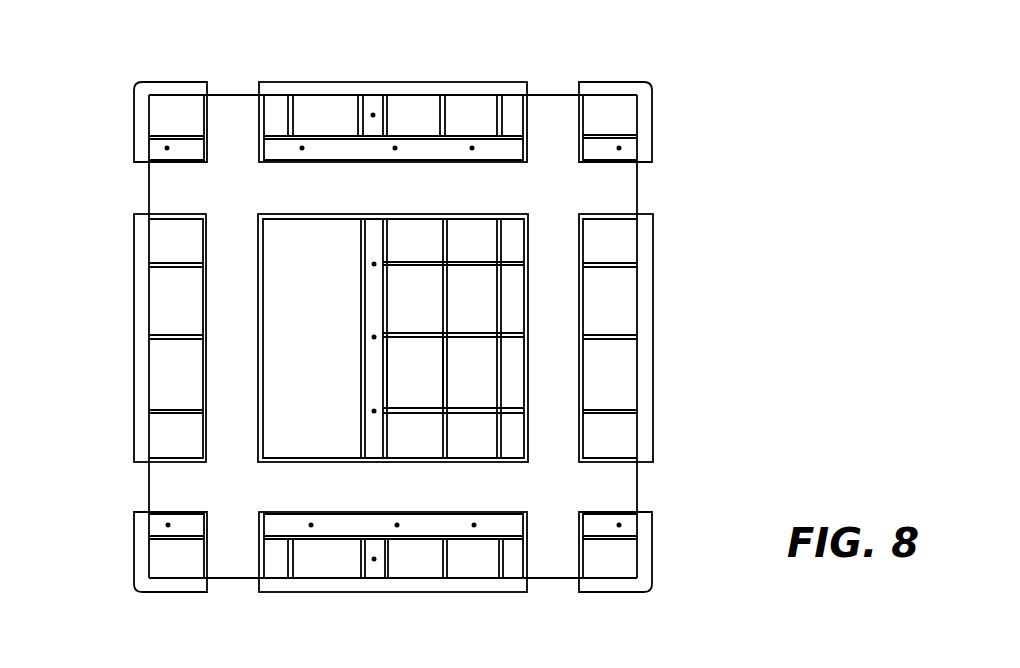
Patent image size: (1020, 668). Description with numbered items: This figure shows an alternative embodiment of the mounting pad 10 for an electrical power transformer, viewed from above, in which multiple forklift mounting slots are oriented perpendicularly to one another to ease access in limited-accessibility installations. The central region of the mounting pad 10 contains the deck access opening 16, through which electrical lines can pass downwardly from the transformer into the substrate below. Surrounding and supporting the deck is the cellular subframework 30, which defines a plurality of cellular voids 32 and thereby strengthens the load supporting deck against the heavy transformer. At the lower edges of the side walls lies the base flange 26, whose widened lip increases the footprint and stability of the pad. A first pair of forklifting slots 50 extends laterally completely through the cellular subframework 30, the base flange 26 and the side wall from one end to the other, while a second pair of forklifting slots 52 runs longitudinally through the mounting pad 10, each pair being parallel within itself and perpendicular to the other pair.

The mounting pad 10 is at (487, 307).
The deck access opening 16 is at (302, 362).
The base flange 26 is at (136, 89).
The cellular subframework 30 is at (475, 262).
The cellular voids 32 is at (465, 372).
The first pair of forklifting slots 50 is at (422, 188).
The second pair of forklifting slots 52 is at (228, 327).